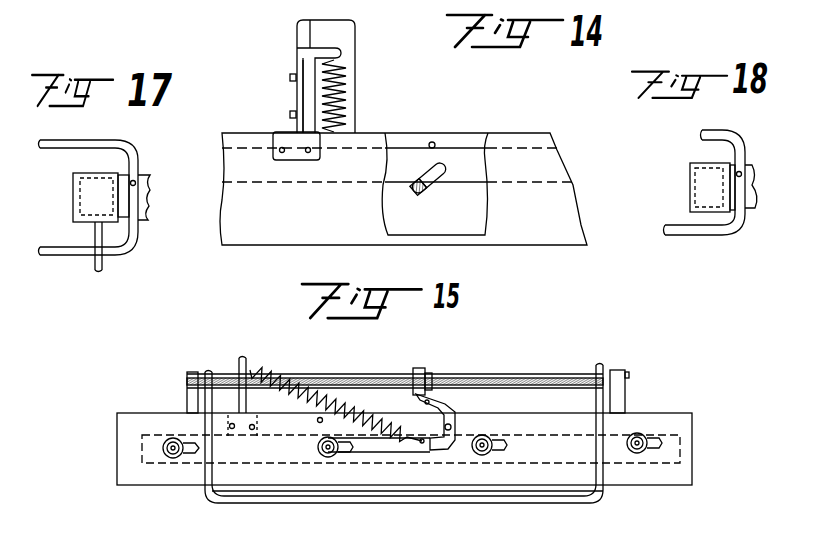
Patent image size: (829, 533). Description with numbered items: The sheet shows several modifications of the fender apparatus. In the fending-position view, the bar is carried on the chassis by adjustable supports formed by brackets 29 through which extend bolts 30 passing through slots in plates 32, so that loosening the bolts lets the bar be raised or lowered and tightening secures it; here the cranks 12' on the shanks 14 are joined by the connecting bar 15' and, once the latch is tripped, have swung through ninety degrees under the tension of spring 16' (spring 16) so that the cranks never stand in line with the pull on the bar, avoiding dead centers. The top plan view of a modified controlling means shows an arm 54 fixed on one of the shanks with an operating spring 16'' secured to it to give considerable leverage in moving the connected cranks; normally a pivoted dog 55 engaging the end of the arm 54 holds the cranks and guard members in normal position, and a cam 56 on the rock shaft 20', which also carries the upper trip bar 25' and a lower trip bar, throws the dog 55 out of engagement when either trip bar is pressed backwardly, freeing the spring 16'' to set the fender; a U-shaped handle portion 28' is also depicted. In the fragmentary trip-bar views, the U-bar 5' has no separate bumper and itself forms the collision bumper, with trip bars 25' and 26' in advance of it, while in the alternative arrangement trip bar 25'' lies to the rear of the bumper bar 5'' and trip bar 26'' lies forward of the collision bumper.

In FIG. 14, the bracket 29 is at (300, 35).
In FIG. 14, the bolt 30 is at (289, 77).
In FIG. 14, the plate 32 is at (308, 93).
In FIG. 14, the spring 16' is at (366, 96).
In FIG. 14, the connecting bar 15' is at (403, 175).
In FIG. 14, the U-bar 5' is at (540, 125).
In FIG. 17, the U-bar 5' is at (93, 222).
In FIG. 14, the crank 12' is at (441, 194).
In FIG. 17, the upper trip bar 25' is at (81, 160).
In FIG. 17, the trip bar 26' is at (82, 251).
In FIG. 18, the trip bar 25'' is at (694, 150).
In FIG. 18, the trip bar 26'' is at (683, 231).
In FIG. 18, the bumper bar 5'' is at (703, 187).
In FIG. 15, the bumper bar 5'' is at (404, 424).
In FIG. 15, the operating spring 16'' is at (337, 397).
In FIG. 15, the spring 16 is at (399, 370).
In FIG. 15, the shank 14 is at (400, 405).
In FIG. 15, the cam 56 is at (426, 370).
In FIG. 15, the rock shaft 20' is at (395, 364).
In FIG. 15, the pivoted dog 55 is at (456, 415).
In FIG. 15, the arm 54 is at (382, 450).
In FIG. 15, the handle 28' is at (404, 449).